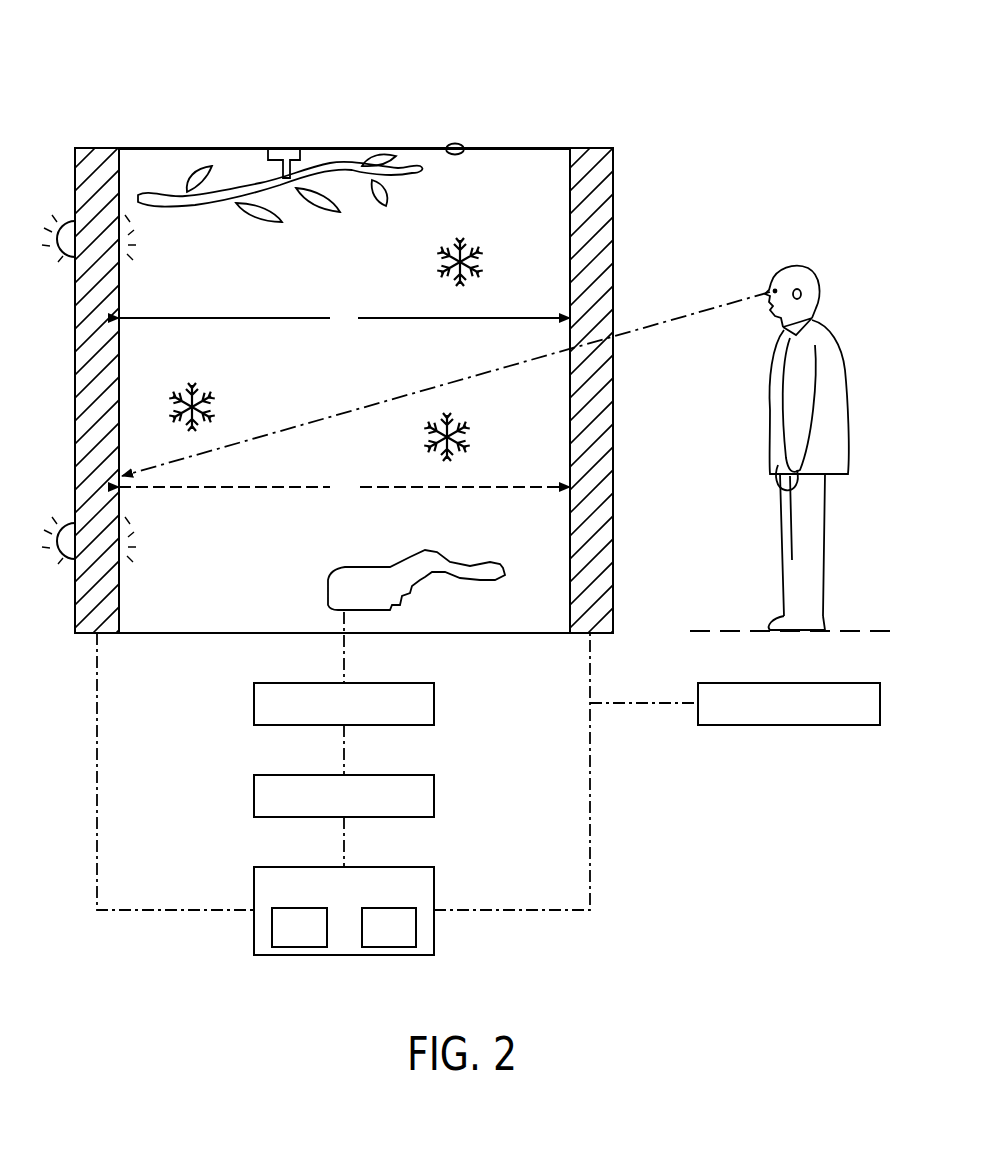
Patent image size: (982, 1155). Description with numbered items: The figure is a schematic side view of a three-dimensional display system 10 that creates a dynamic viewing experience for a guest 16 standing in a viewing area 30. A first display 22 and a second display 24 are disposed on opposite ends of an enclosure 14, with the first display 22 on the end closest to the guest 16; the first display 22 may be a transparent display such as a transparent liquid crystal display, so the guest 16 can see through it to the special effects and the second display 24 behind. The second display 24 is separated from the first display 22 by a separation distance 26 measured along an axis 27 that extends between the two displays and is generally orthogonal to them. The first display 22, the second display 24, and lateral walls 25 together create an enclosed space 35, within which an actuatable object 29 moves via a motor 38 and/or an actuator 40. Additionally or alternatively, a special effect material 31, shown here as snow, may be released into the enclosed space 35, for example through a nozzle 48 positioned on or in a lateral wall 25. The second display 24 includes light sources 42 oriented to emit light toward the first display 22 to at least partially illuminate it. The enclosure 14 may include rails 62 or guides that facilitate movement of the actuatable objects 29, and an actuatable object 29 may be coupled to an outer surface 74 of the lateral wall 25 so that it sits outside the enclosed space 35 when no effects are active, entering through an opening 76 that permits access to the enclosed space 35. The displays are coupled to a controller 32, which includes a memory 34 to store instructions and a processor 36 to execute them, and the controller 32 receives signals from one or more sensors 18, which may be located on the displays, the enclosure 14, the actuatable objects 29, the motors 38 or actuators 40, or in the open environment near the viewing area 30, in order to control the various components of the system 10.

The three-dimensional display system 10 is at (98, 68).
The enclosure 14 is at (356, 147).
The guest 16 is at (845, 424).
The sensors 18 is at (790, 682).
The first display 22 is at (592, 157).
The second display 24 is at (100, 157).
The lateral walls 25 is at (520, 147).
The separation distance 26 is at (344, 334).
The axis 27 is at (344, 487).
The actuatable object 29 is at (258, 188).
The viewing area 30 is at (765, 634).
The special effect material 31 is at (436, 270).
The controller 32 is at (390, 866).
The memory 34 is at (272, 925).
The enclosed space 35 is at (230, 558).
The processor 36 is at (416, 925).
The motor 38 is at (390, 774).
The actuator 40 is at (390, 682).
The light sources 42 is at (62, 245).
The nozzle 48 is at (448, 145).
The rails 62 is at (283, 147).
The outer surface 74 is at (205, 637).
The openings 76 is at (335, 636).